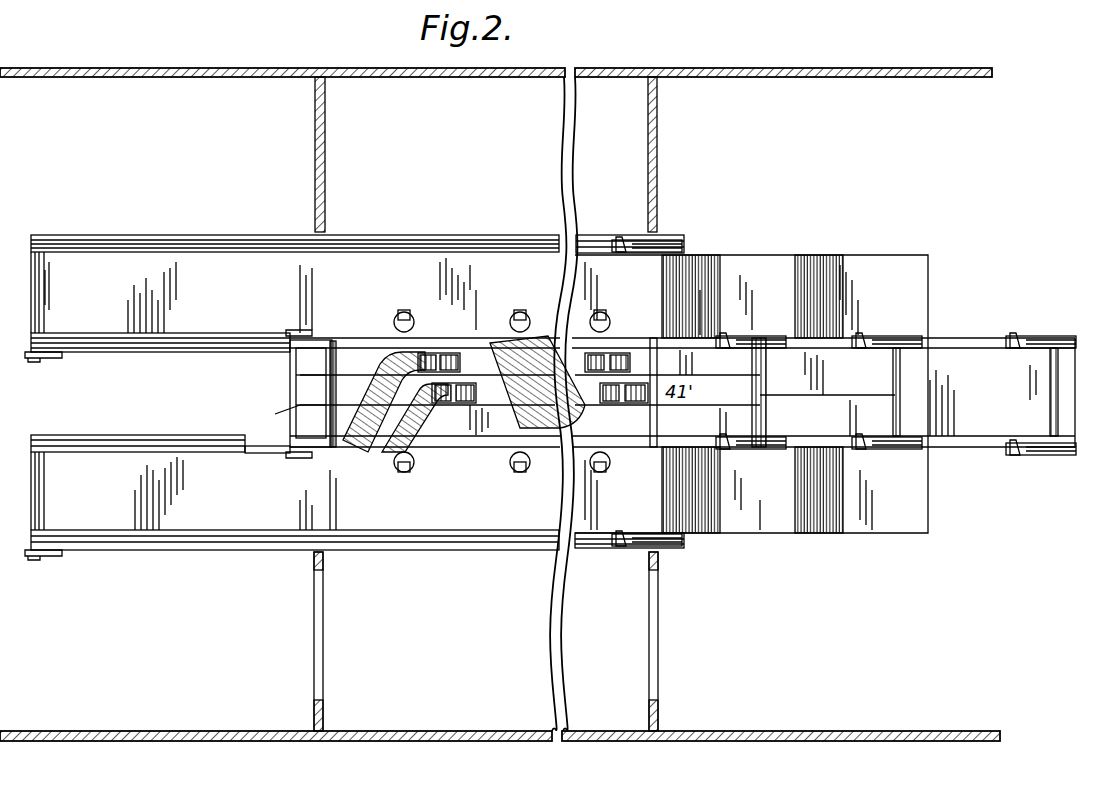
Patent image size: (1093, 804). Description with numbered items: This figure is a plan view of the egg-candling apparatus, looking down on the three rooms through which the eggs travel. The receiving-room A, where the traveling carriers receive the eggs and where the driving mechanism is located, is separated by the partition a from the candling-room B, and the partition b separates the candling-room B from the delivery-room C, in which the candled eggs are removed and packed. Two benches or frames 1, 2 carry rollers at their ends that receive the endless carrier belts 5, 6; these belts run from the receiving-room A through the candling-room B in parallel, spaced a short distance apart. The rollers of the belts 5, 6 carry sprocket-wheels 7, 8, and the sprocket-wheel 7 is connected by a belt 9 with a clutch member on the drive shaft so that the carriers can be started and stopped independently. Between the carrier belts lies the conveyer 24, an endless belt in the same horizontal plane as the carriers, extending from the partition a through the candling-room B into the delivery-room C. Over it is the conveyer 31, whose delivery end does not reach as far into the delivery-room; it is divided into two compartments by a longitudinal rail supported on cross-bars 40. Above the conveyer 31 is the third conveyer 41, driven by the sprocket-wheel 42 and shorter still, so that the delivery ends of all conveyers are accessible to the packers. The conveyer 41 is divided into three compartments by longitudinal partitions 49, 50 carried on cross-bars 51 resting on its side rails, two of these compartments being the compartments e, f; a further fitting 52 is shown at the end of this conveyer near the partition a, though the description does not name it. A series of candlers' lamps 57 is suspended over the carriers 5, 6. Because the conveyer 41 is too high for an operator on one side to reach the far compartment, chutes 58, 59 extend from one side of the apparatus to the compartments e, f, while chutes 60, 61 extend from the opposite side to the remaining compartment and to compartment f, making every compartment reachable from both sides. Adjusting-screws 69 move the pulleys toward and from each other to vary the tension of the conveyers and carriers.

The bench or frame 1 is at (410, 245).
The bench or frame 2 is at (412, 540).
The endless belt 5 is at (253, 302).
The endless belt 6 is at (300, 205).
The sprocket-wheel 7 is at (42, 362).
The sprocket-wheel 8 is at (45, 560).
The belt 9 is at (682, 392).
The conveyer 24 is at (996, 380).
The conveyer 31 is at (826, 378).
The cross-bars 40 is at (893, 372).
The third conveyer 41 is at (300, 388).
The sprocket-wheel 42 is at (300, 458).
The longitudinal partition 49 is at (365, 385).
The longitudinal partition 50 is at (276, 416).
The cross-bars 51 is at (335, 345).
The upper clip 52 is at (292, 330).
The candlers' lamps 57 is at (511, 391).
The chute 58 is at (350, 450).
The chute 59 is at (385, 450).
The chute 60 is at (500, 345).
The chute 61 is at (537, 338).
The adjusting-screws 69 is at (628, 240).
The receiving-room A is at (198, 184).
The candling-room B is at (469, 180).
The delivery-room C is at (823, 168).
The partition a is at (335, 154).
The partition b is at (657, 167).
The conveyer-compartment e is at (524, 363).
The conveyer-compartment f is at (540, 392).